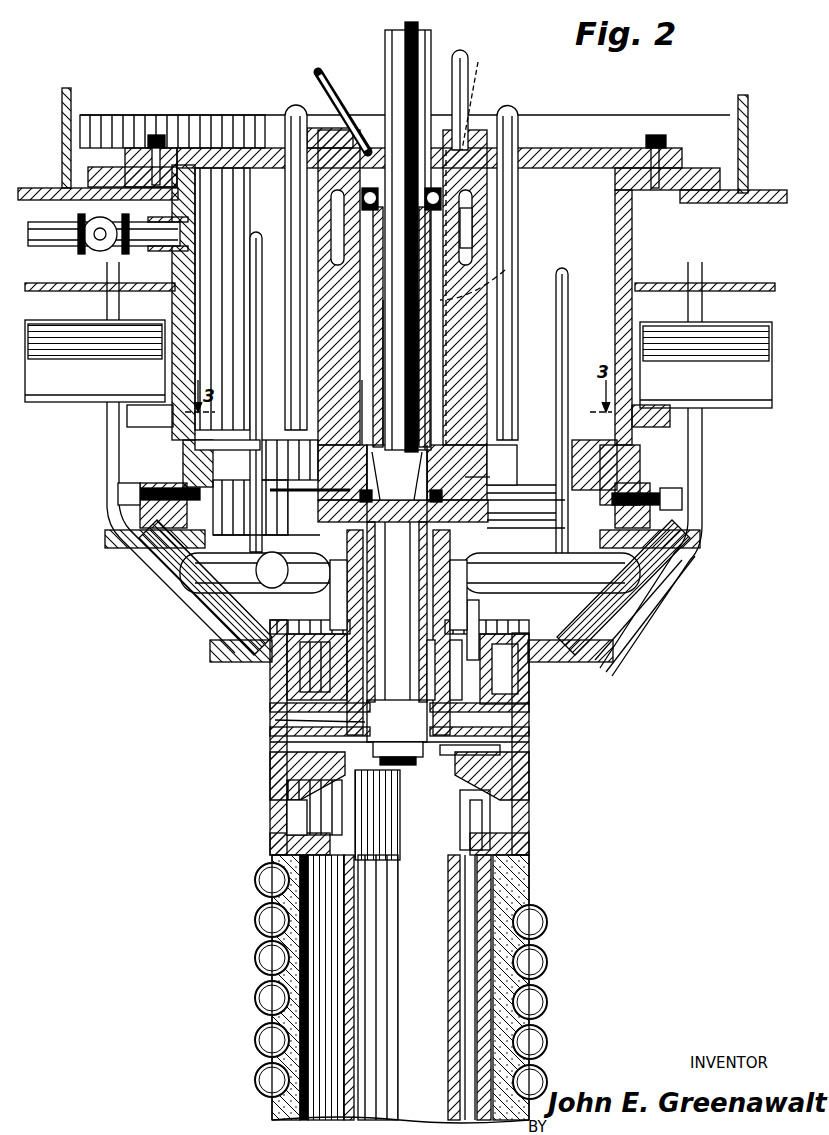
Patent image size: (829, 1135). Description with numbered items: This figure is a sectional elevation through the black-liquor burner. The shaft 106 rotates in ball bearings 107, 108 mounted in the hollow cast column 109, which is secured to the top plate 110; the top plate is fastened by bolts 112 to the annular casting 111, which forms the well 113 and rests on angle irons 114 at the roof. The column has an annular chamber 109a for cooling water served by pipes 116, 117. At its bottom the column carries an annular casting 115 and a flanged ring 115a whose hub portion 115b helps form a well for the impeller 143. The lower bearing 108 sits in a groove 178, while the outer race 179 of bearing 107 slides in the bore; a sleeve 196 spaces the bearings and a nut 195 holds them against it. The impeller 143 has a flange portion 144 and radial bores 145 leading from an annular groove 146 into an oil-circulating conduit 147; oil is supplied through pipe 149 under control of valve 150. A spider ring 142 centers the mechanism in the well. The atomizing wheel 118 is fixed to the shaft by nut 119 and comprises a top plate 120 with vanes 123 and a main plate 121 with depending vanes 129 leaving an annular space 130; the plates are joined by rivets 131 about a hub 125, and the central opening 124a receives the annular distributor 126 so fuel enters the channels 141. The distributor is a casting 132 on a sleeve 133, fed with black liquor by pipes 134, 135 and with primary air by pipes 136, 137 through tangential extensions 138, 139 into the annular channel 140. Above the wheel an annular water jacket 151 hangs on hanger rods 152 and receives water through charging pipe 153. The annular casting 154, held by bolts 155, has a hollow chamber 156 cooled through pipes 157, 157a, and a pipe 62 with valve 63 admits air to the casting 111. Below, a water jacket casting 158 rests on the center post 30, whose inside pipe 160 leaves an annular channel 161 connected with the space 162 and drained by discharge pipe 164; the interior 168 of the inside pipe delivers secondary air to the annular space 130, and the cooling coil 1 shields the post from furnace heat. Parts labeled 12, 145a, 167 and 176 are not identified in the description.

The cooling coil 1 is at (552, 968).
The air passage 12 is at (268, 742).
The center post 30 is at (292, 972).
The pipe 62 is at (170, 230).
The valve 63 is at (103, 225).
The shaft 106 is at (412, 90).
The ball bearing 107 is at (470, 215).
The ball bearing 108 is at (470, 400).
The hollow cast column 109 is at (480, 230).
The annular chamber 109a is at (462, 248).
The top plate 110 is at (586, 155).
The annular casting 111 is at (690, 175).
The bolts 112 is at (157, 135).
The well 113 is at (618, 238).
The angle irons 114 is at (80, 115).
The annular casting 115 is at (475, 467).
The flanged ring 115a is at (485, 519).
The hub portion 115b is at (465, 477).
The pipe 116 is at (410, 45).
The pipe 117 is at (505, 270).
The atomizing wheel 118 is at (300, 775).
The nut 119 is at (405, 790).
The top plate 120 is at (530, 716).
The main plate 121 is at (530, 742).
The vanes 123 is at (530, 708).
The central opening 124a is at (445, 782).
The hub 125 is at (355, 700).
The annular distributor 126 is at (450, 655).
The depending vanes 129 is at (495, 760).
The annular space 130 is at (495, 778).
The bolts or rivets 131 is at (270, 731).
The distributor casting 132 is at (462, 568).
The sleeve 133 is at (345, 596).
The pipe 134 is at (285, 112).
The pipe 135 is at (520, 112).
The pipe 136 is at (250, 293).
The pipe 137 is at (568, 300).
The hollow extension 138 is at (217, 587).
The hollow extension 139 is at (532, 610).
The annular channel 140 is at (446, 682).
The channels 141 is at (345, 720).
The spider ring 142 is at (200, 442).
The impeller 143 is at (360, 460).
The annular flange portion 144 is at (490, 494).
The radial bores 145 is at (366, 520).
The ring 145a is at (399, 483).
The annular groove 146 is at (372, 505).
The oil-circulating conduit 147 is at (270, 500).
The pipe 149 is at (338, 95).
The valve 150 is at (455, 902).
The annular water jacket 151 is at (515, 676).
The hanger rods 152 is at (265, 540).
The charging pipe 153 is at (469, 62).
The annular casting 154 is at (718, 557).
The bolts 155 is at (135, 488).
The hollow annular chamber 156 is at (645, 620).
The pipe 157 is at (705, 278).
The pipe 157a is at (107, 275).
The annular water jacket casting 158 is at (530, 816).
The inside pipe 160 is at (475, 896).
The annular channel 161 is at (275, 859).
The interior annular space 162 is at (272, 810).
The discharge pipe 164 is at (505, 862).
The sleeve 167 is at (472, 643).
The interior of pipe 168 is at (528, 922).
The bracket 176 is at (672, 420).
The groove 178 is at (360, 403).
The outer race 179 is at (345, 210).
The nut 195 is at (470, 98).
The sleeve 196 is at (355, 228).